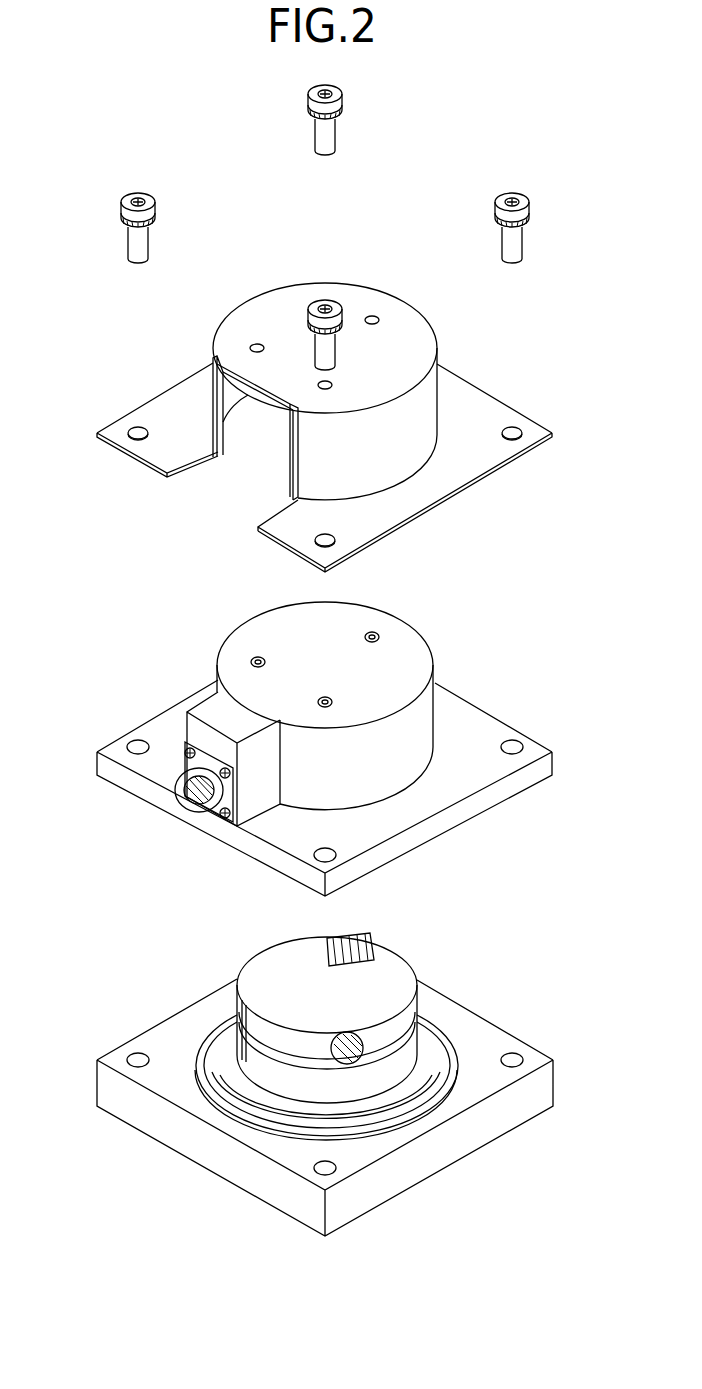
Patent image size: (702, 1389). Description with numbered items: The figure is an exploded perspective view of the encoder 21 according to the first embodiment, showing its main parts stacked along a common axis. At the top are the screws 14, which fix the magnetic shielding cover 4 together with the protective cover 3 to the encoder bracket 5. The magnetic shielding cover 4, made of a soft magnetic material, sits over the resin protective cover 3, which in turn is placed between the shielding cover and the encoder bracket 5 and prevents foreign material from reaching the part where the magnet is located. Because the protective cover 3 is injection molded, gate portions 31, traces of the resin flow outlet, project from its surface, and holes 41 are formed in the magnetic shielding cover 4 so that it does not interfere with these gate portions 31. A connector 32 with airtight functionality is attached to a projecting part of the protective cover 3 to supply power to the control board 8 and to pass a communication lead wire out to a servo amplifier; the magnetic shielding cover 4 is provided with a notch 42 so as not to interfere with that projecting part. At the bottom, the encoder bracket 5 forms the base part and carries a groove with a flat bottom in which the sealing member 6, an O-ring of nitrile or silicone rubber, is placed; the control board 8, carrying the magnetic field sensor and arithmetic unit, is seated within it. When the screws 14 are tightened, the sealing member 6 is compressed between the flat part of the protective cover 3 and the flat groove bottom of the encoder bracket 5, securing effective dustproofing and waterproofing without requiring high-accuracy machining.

The encoder 21 is at (80, 295).
The screws 14 is at (122, 198).
The magnetic shielding cover 4 is at (485, 425).
The holes 41 is at (378, 317).
The notch 42 is at (222, 427).
The protective cover 3 is at (485, 735).
The gate portions 31 is at (378, 633).
The connector 32 is at (205, 775).
The encoder bracket 5 is at (487, 1040).
The sealing member 6 is at (237, 1115).
The control board 8 is at (258, 977).